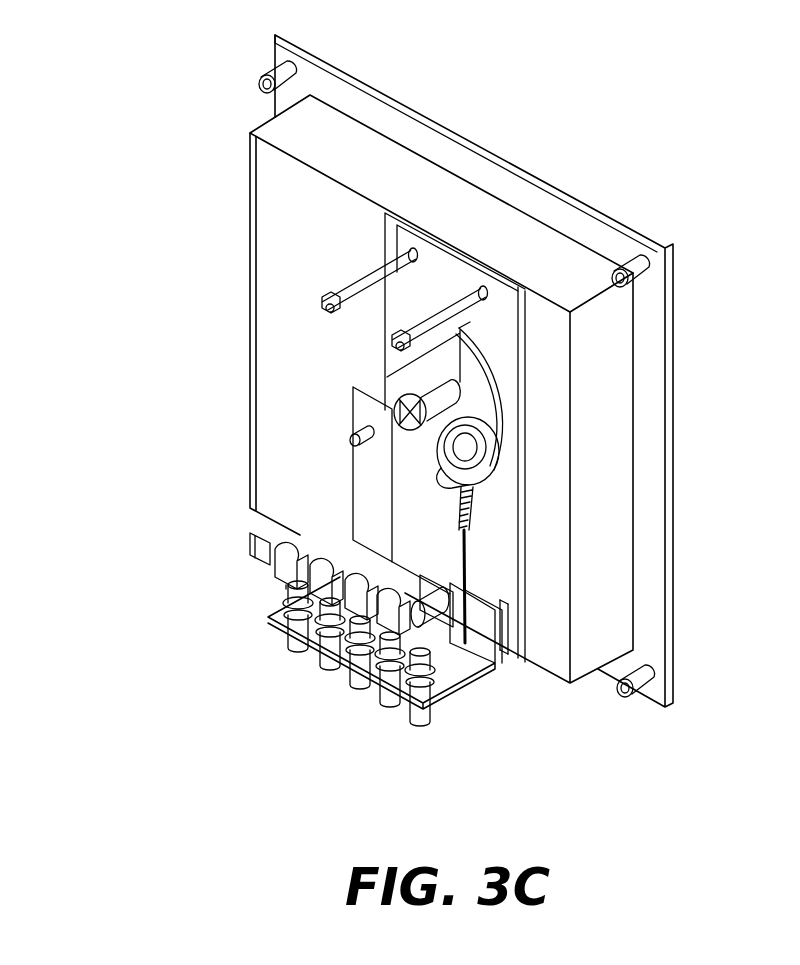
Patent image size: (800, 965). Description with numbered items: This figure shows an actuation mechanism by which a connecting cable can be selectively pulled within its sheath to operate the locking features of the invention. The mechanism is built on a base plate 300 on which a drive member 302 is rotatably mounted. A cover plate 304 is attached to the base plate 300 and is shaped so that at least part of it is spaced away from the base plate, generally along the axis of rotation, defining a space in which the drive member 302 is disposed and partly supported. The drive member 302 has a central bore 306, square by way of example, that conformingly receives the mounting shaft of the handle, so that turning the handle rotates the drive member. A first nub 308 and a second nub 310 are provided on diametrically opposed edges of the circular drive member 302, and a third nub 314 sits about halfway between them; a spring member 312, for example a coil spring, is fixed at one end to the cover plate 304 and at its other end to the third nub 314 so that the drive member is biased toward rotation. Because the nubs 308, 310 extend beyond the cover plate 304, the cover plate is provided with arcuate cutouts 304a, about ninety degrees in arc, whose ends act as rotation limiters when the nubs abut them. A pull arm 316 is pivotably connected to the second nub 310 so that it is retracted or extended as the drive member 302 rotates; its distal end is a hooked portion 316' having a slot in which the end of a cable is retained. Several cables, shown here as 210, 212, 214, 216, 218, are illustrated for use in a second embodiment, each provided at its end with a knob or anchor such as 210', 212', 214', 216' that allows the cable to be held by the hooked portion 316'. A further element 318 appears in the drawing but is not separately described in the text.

The base plate 300 is at (510, 643).
The drive member 302 is at (480, 412).
The cover plate 304 is at (370, 340).
The arcuate cutouts 304a is at (372, 347).
The central bore 306 is at (395, 405).
The first nub 308 is at (490, 343).
The second nub 310 is at (353, 440).
The spring member 312 is at (470, 520).
The third nub 314 is at (463, 457).
The pull arm 316 is at (565, 595).
The hooked portion 316' is at (634, 631).
The connector shelf 318 is at (457, 660).
The connector 210 is at (247, 631).
The connector 212 is at (294, 658).
The connector 214 is at (321, 688).
The connector 216 is at (370, 710).
The connector 218 is at (415, 717).
The anchor 210' is at (231, 561).
The anchor 212' is at (239, 590).
The connector terminal 214' is at (213, 642).
The connector terminal 216' is at (263, 692).